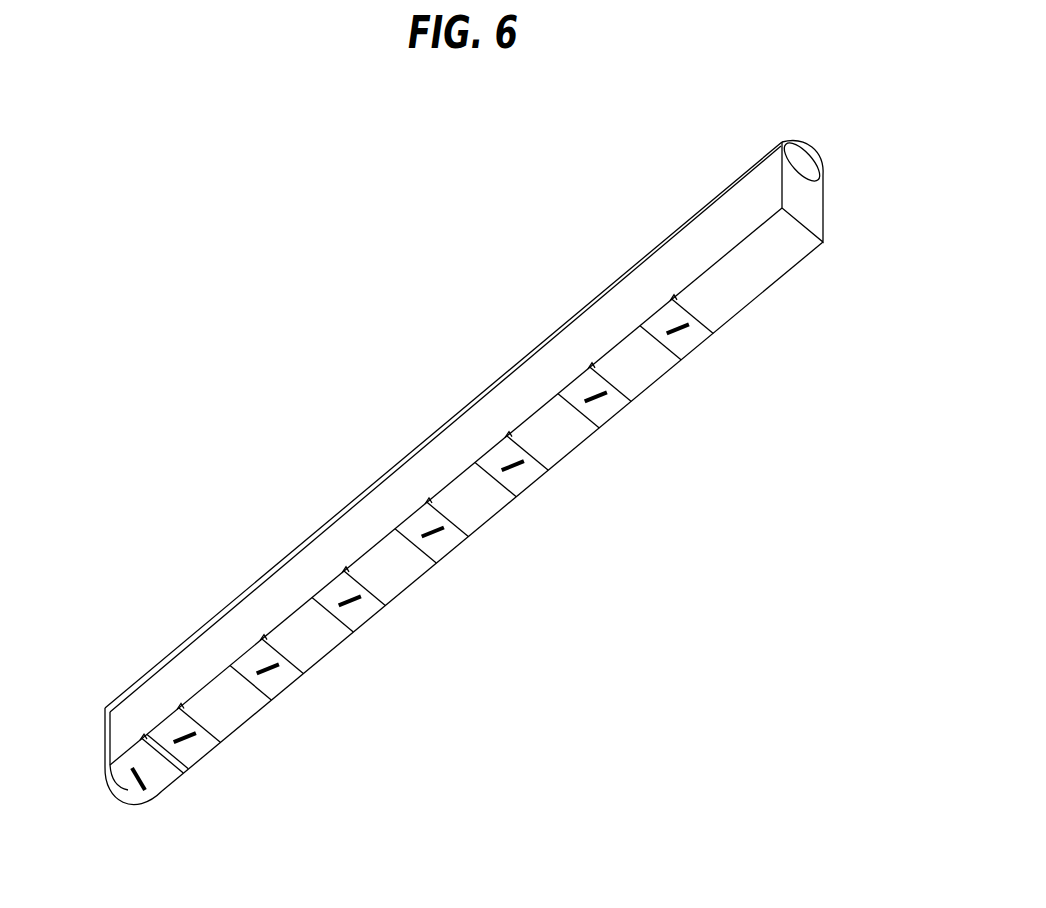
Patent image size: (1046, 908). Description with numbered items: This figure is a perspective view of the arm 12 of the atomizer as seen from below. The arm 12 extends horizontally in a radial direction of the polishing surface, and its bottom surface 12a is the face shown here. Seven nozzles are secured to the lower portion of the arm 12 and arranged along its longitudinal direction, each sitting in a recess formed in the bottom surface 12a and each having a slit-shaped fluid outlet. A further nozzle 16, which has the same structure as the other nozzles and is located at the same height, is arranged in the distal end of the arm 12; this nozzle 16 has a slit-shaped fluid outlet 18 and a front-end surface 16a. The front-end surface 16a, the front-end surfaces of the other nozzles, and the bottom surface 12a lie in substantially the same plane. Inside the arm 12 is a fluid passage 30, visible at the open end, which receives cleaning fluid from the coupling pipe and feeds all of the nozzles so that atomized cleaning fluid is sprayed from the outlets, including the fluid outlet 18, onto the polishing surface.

The arm 12 is at (704, 208).
The bottom surface of the arm 12a is at (552, 428).
The nozzle 16 is at (160, 806).
The front-end surface 16a is at (128, 790).
The fluid outlet 18 is at (136, 778).
The fluid passage 30 is at (803, 168).